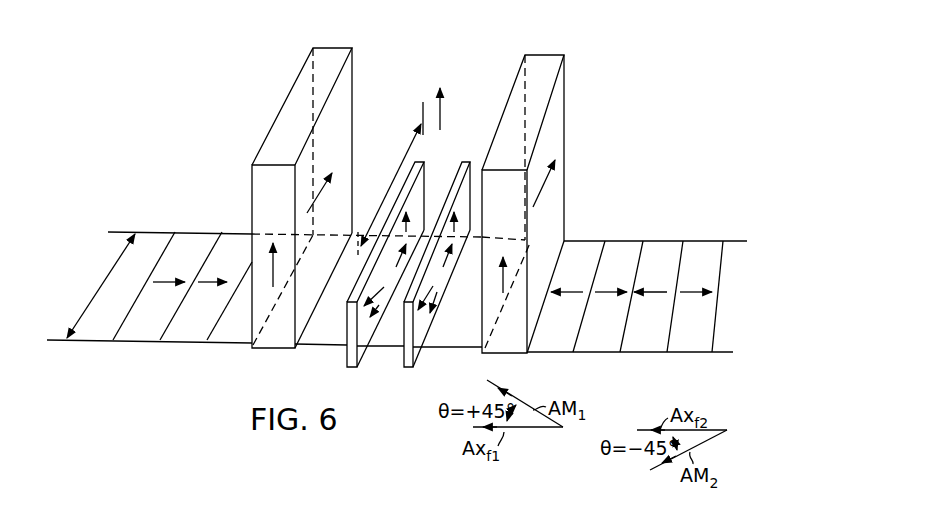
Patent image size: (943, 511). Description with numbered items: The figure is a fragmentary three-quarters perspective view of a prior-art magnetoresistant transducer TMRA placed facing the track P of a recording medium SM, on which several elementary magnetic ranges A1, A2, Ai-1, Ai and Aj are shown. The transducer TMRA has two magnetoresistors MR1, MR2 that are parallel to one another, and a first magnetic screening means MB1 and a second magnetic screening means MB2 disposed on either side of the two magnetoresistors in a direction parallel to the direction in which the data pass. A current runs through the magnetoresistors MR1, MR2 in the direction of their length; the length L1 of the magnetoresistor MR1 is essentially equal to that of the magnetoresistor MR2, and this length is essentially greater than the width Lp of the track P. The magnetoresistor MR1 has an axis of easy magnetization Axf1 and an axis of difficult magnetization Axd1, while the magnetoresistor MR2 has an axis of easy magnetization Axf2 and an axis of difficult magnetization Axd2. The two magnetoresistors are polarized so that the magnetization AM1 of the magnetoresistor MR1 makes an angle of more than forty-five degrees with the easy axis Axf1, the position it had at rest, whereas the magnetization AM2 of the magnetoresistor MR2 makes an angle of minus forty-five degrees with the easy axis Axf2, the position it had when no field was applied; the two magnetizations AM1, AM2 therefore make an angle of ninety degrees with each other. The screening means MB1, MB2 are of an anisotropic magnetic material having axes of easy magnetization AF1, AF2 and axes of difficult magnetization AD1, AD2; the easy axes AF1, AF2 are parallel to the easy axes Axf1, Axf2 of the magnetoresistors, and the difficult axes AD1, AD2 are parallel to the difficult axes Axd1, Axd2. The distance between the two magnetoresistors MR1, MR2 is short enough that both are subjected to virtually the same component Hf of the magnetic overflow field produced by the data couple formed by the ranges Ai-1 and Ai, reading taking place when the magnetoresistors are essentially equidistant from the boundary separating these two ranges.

The magnetoresistant transducer TMRA is at (412, 82).
The first magnetic screening means MB1 is at (277, 115).
The second magnetic screening means MB2 is at (564, 118).
The first magnetoresistor MR1 is at (346, 357).
The second magnetoresistor MR2 is at (413, 363).
The track P is at (613, 240).
The recording medium SM is at (707, 203).
The width of the track Lp is at (96, 286).
The length of the magnetoresistor MR1 L1 is at (390, 180).
The component of the magnetic overflow field Hf is at (453, 108).
The axis of difficult magnetization of MB1 AD1 is at (275, 281).
The axis of difficult magnetization of MB2 AD2 is at (508, 293).
The axis of easy magnetization of MB1 AF1 is at (328, 204).
The axis of easy magnetization of MB2 AF2 is at (551, 200).
The magnetization of the magnetoresistor MR1 AM1 is at (368, 288).
The magnetization of the magnetoresistor MR2 AM2 is at (437, 300).
The axis of difficult magnetization of MR1 Axd1 is at (410, 210).
The axis of difficult magnetization of MR2 Axd2 is at (458, 210).
The axis of easy magnetization of MR1 Axf1 is at (377, 306).
The axis of easy magnetization of MR2 Axf2 is at (421, 288).
The elementary magnetic range A1 is at (149, 286).
The elementary magnetic range A2 is at (193, 286).
The elementary magnetic range Ai-1 is at (545, 346).
The elementary magnetic range Ai is at (605, 346).
The elementary magnetic range Aj is at (643, 346).